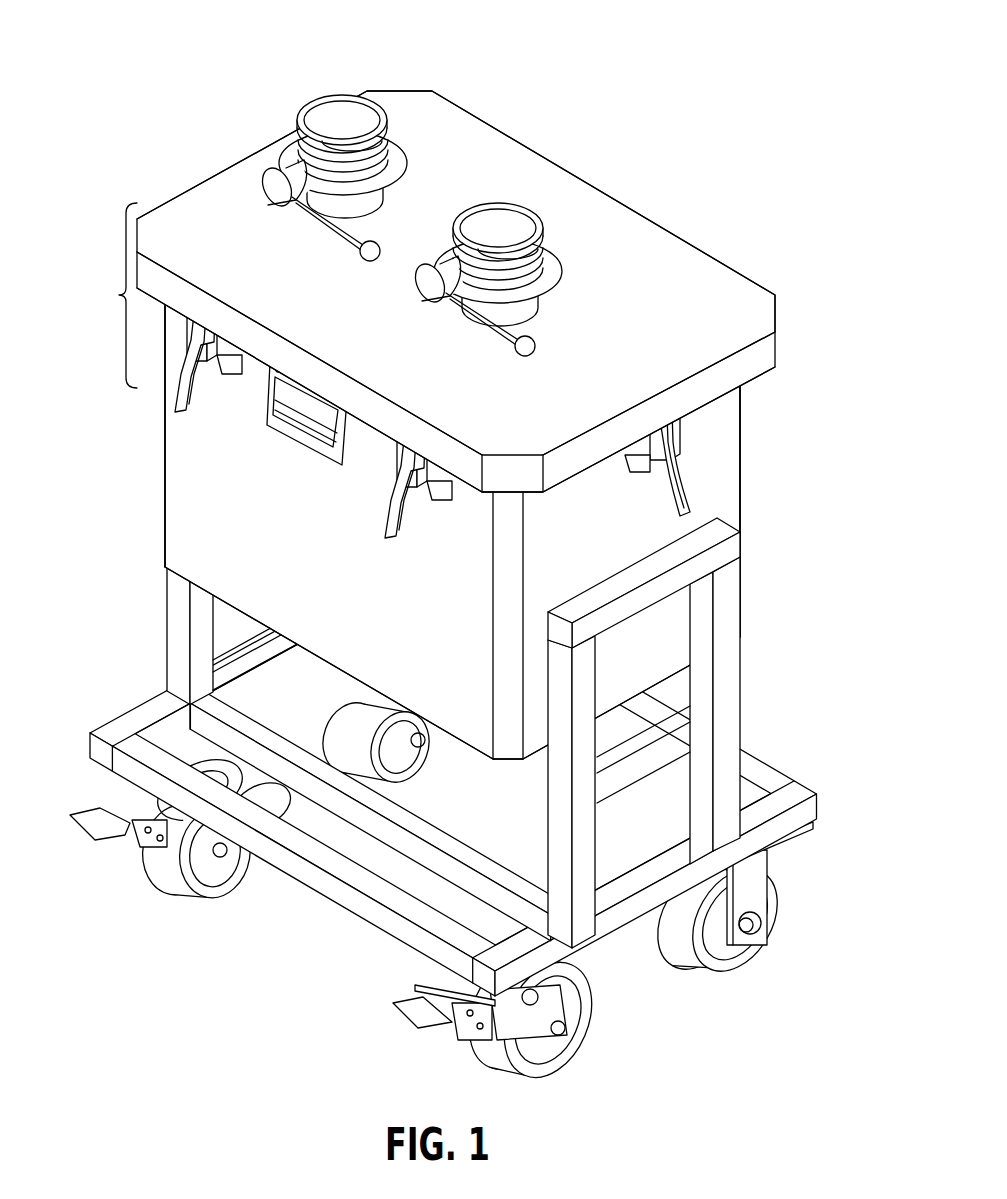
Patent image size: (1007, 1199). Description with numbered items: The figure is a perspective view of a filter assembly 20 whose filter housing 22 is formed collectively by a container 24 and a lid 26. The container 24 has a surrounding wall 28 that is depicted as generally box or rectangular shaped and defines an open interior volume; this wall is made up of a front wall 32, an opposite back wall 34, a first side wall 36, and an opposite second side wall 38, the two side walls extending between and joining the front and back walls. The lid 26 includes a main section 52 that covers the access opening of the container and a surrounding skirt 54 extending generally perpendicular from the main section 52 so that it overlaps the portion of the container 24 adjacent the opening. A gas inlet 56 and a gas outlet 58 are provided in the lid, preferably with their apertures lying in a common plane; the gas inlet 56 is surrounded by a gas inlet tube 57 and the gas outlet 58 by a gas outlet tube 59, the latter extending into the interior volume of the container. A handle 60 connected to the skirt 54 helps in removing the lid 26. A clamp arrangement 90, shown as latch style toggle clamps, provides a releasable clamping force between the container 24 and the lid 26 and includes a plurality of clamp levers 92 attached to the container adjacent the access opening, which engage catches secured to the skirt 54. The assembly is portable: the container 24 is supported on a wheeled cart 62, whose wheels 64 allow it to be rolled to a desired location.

The filter assembly 20 is at (616, 92).
The filter housing 22 is at (458, 253).
The container 24 is at (452, 529).
The lid 26 is at (482, 253).
The surrounding wall 28 is at (722, 472).
The front wall 32 is at (268, 560).
The back wall 34 is at (745, 522).
The first side wall 36 is at (570, 540).
The second side wall 38 is at (165, 542).
The main section 52 is at (640, 237).
The surrounding skirt 54 is at (750, 358).
The gas inlet 56 is at (340, 137).
The gas inlet tube 57 is at (340, 208).
The gas outlet 58 is at (506, 235).
The gas outlet tube 59 is at (525, 305).
The handle 60 is at (287, 433).
The wheeled cart 62 is at (730, 698).
The wheels 64 is at (418, 778).
The clamp arrangement 90 is at (195, 394).
The clamp levers 92 is at (178, 410).